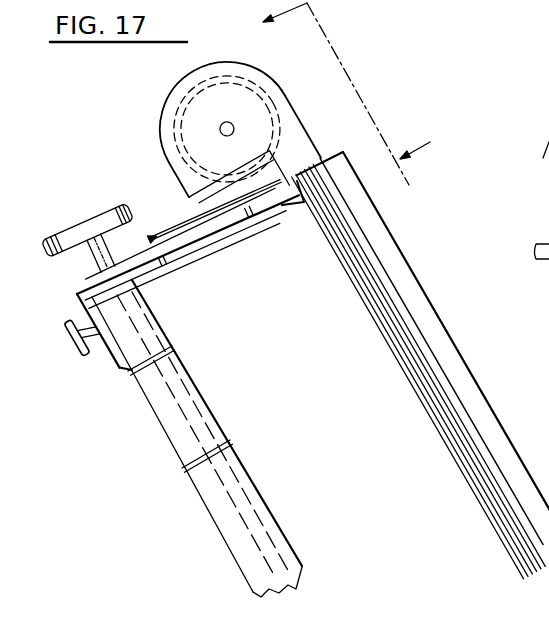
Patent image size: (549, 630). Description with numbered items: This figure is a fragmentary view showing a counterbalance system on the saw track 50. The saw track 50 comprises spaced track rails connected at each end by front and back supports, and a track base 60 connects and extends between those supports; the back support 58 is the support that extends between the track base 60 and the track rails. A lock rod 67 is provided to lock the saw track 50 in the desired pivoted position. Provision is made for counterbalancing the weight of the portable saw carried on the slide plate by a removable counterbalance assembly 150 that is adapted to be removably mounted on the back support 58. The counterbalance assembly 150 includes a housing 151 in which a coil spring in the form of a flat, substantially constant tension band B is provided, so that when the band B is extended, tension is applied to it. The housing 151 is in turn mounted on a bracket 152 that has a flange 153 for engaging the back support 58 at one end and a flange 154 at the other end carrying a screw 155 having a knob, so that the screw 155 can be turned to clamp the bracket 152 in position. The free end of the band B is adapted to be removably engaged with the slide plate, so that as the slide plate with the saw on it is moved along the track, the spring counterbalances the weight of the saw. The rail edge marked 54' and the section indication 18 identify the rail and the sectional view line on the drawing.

The section line 18- 18 is at (354, 94).
The counterbalance assembly 150 is at (156, 153).
The housing 151 is at (183, 127).
The band B is at (368, 256).
The rail edge 54' is at (446, 331).
The back support 58 is at (206, 247).
The lock rod 67 is at (94, 229).
The bracket 152 is at (78, 291).
The flange 153 is at (296, 206).
The flange 154 is at (113, 366).
The screw 155 is at (78, 347).
The track base 60 is at (240, 545).
The saw track 50 is at (163, 468).